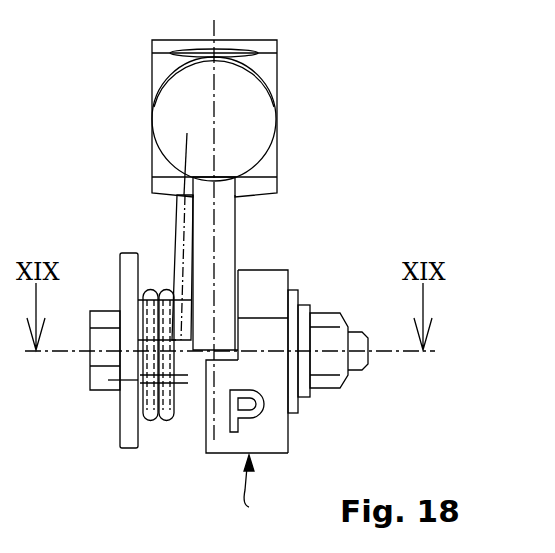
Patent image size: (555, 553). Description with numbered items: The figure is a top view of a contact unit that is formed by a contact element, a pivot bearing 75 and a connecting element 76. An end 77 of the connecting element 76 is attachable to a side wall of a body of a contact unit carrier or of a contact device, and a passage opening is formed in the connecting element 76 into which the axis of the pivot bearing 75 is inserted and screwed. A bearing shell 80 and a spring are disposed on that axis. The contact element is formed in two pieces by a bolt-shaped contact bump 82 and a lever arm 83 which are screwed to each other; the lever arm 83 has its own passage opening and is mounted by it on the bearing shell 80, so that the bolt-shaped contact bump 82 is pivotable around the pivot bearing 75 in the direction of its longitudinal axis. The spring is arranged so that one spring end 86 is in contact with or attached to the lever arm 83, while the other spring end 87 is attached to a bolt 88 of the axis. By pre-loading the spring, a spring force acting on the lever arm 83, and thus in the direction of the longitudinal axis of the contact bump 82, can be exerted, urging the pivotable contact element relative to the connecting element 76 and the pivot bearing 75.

The pivot bearing 75 is at (311, 299).
The connecting element 76 is at (265, 432).
The end 77 is at (266, 486).
The bearing shell 80 is at (0, 552).
The bolt-shaped contact bump 82 is at (257, 115).
The lever arm 83 is at (225, 238).
The spring end 86 is at (180, 209).
The spring end 87 is at (143, 402).
The bolt 88 is at (147, 398).